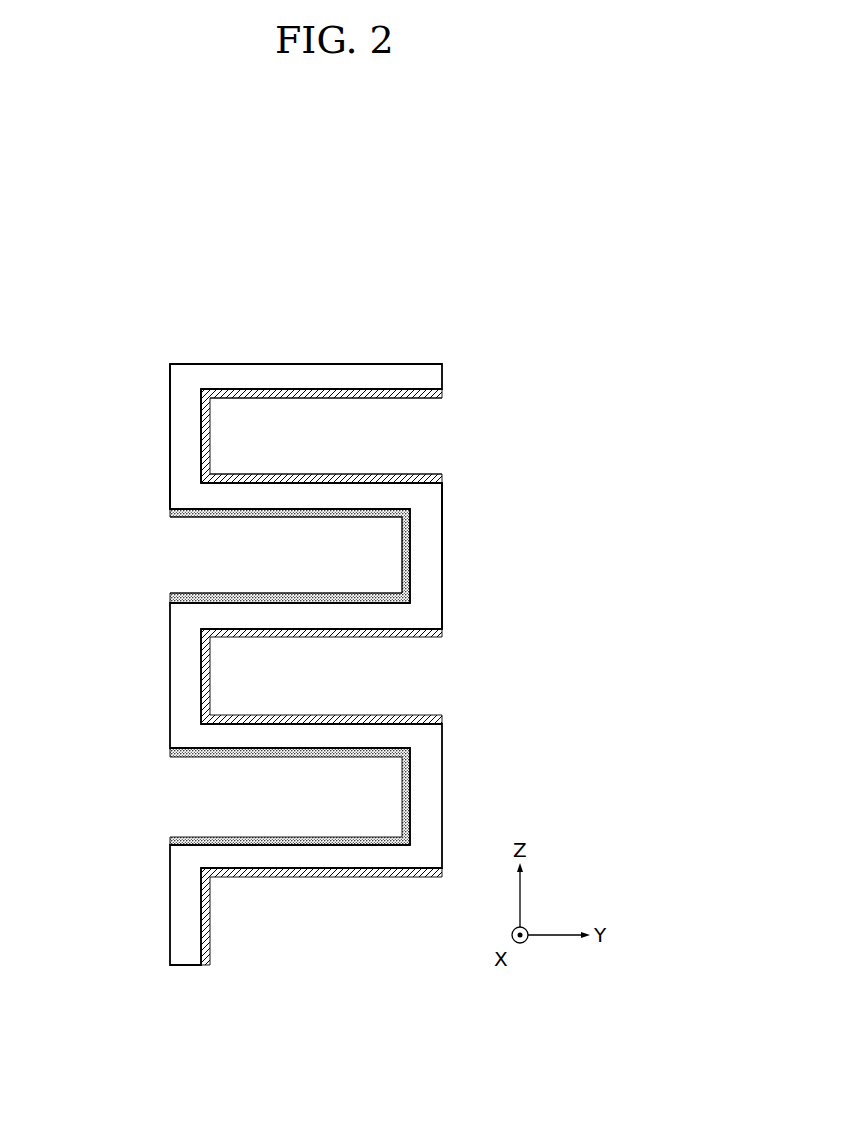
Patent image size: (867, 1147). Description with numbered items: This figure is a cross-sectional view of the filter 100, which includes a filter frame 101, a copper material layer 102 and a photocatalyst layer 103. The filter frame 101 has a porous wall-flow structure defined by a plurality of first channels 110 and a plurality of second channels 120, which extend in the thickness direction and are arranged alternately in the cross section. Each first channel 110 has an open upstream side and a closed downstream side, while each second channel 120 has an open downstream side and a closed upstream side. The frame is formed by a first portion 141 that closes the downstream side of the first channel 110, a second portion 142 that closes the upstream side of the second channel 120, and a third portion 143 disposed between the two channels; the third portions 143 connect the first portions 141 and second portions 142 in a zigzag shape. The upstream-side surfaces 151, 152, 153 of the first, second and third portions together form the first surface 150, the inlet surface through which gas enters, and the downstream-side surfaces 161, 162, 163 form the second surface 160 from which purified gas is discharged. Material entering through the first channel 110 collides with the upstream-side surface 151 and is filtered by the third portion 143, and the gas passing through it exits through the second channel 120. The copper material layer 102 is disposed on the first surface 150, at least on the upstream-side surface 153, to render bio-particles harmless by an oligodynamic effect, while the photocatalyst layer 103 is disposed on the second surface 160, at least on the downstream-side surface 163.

The filter 100 is at (462, 336).
The filter frame 101 is at (402, 350).
The copper material layer 102 is at (177, 752).
The photocatalyst layer 103 is at (442, 718).
The first channels 110 is at (327, 570).
The second channels 120 is at (327, 443).
The first portion 141 is at (437, 557).
The second portion 142 is at (178, 407).
The third portion 143 is at (257, 500).
The first surface 150 is at (88, 515).
The upstream-side surface of the first portion 151 is at (405, 577).
The upstream-side surface of the second portion 152 is at (170, 497).
The upstream-side surface of the third portion 153 is at (263, 512).
The second surface 160 is at (520, 405).
The downstream-side surface of the first portion 161 is at (442, 523).
The downstream-side surface of the second portion 162 is at (210, 417).
The downstream-side surface of the third portion 163 is at (345, 483).